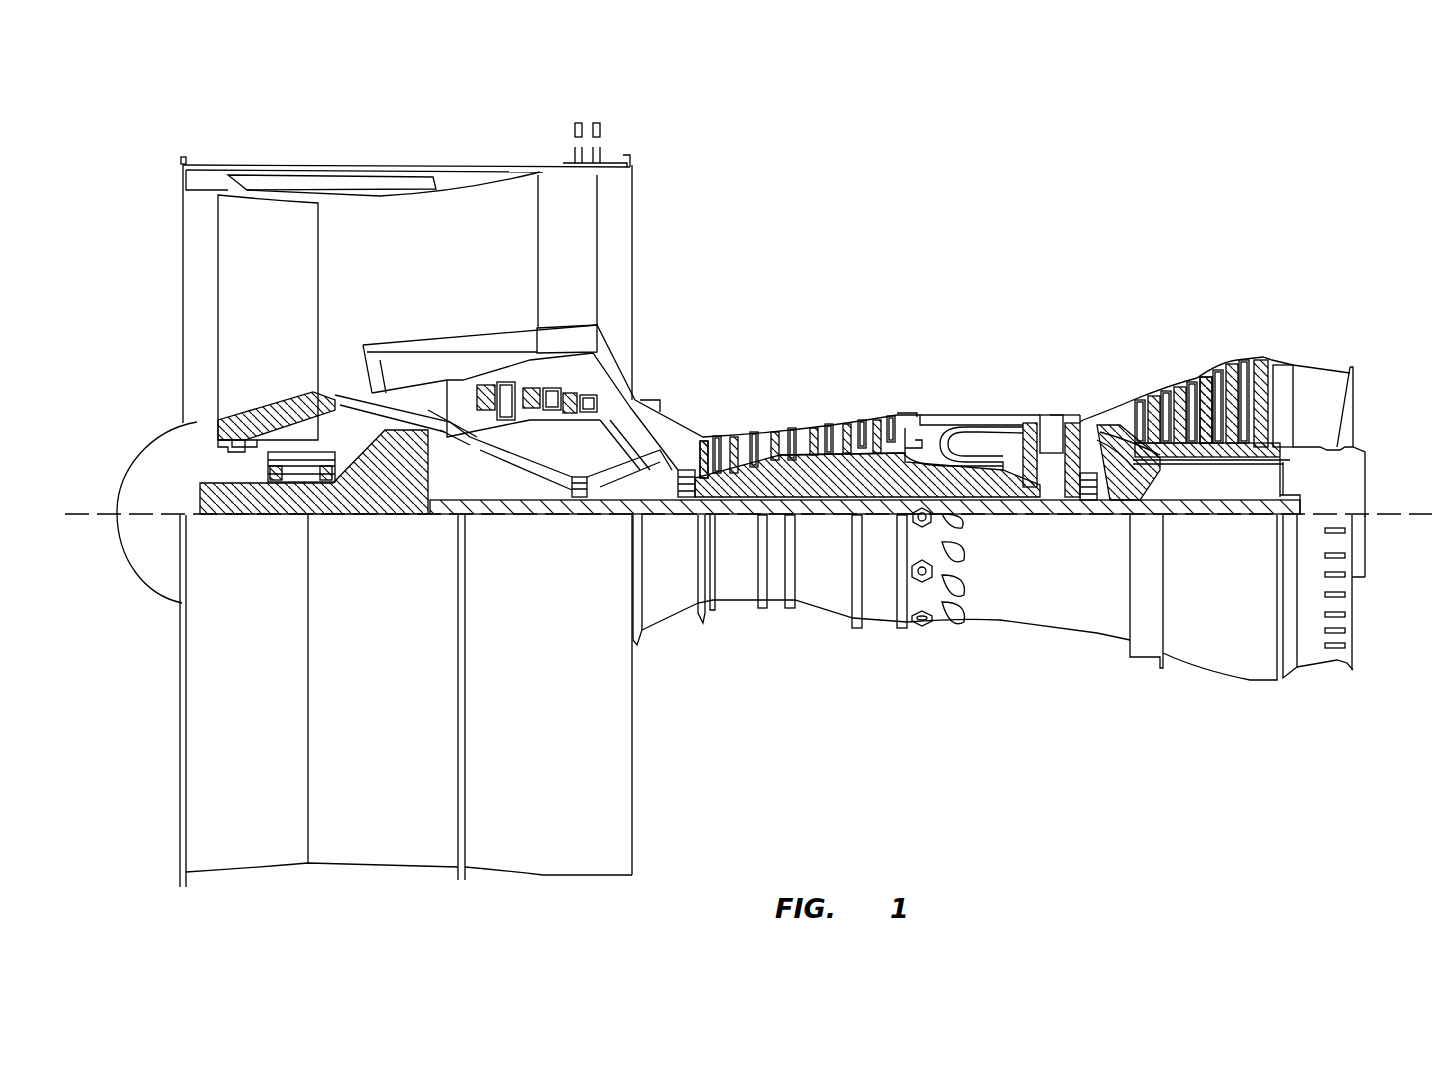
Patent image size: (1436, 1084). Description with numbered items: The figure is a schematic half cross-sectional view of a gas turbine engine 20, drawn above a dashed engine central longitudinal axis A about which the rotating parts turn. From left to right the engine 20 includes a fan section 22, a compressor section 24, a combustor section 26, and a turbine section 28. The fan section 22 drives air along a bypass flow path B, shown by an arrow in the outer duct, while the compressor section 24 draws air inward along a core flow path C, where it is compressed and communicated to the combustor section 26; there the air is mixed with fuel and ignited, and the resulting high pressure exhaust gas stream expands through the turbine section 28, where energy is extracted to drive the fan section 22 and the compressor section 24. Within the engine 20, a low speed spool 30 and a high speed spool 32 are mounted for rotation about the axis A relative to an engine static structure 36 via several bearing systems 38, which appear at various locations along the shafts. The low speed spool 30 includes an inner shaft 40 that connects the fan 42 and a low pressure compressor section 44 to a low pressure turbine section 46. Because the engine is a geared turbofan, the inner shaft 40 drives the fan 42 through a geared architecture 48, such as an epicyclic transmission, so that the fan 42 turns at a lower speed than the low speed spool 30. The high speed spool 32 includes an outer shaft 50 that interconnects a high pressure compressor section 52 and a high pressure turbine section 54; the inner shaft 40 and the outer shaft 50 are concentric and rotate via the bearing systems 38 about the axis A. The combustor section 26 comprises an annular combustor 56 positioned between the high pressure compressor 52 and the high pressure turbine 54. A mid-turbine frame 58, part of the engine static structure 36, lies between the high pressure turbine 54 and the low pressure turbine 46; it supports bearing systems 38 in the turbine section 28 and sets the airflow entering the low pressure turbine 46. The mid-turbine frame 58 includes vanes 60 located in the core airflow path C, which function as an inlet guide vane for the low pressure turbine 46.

The gas turbine engine 20 is at (978, 250).
The fan section 22 is at (328, 163).
The compressor section 24 is at (684, 414).
The combustor section 26 is at (960, 406).
The turbine section 28 is at (1157, 351).
The low speed spool 30 is at (830, 520).
The high speed spool 32 is at (883, 470).
The engine static structure 36 is at (880, 605).
The bearing systems 38 is at (325, 482).
The inner shaft 40 is at (652, 520).
The fan 42 is at (277, 293).
The low pressure compressor section 44 is at (555, 402).
The low pressure turbine section 46 is at (1207, 383).
The geared architecture 48 is at (410, 490).
The outer shaft 50 is at (993, 498).
The high pressure compressor section 52 is at (815, 430).
The high pressure turbine section 54 is at (1053, 413).
The combustor 56 is at (975, 438).
The mid-turbine frame 58 is at (1108, 405).
The vanes 60 is at (1100, 432).
The engine central longitudinal axis A is at (1427, 510).
The bypass flow path B is at (500, 238).
The core flow path C is at (410, 385).